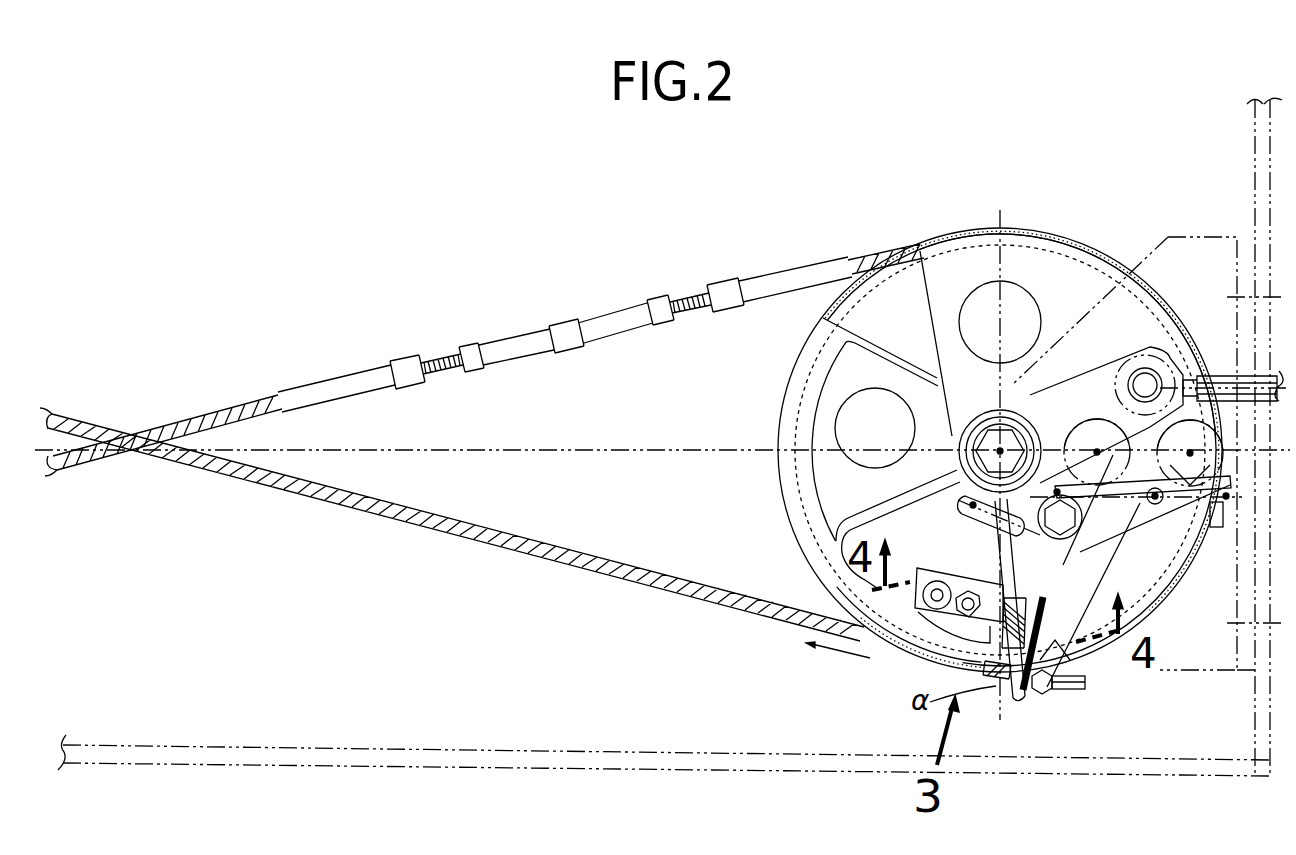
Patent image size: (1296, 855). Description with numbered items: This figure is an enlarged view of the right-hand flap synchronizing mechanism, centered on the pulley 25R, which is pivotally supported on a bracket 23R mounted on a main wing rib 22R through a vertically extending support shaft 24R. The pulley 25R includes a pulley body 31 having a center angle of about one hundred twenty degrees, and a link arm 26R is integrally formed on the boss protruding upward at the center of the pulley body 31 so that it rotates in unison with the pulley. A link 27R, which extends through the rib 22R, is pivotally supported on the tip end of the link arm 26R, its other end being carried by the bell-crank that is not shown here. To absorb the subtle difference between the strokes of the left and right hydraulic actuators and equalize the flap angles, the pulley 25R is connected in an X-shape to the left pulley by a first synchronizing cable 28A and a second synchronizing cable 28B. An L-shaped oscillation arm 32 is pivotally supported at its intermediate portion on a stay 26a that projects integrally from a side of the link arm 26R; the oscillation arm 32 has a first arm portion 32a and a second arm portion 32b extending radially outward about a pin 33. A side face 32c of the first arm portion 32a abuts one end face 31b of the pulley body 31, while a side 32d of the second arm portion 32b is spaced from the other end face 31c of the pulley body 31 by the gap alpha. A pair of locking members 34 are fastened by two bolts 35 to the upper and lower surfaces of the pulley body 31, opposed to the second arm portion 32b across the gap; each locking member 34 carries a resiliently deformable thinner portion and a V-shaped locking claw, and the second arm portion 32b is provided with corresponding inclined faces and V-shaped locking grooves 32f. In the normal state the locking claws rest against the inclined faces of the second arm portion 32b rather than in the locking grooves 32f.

The rib 22R is at (1255, 158).
The bracket 23R is at (1168, 237).
The support shaft 24R is at (960, 440).
The pulley 25R is at (941, 205).
The link arm 26R is at (1100, 378).
The stay 26a is at (1130, 535).
The link 27R is at (1205, 345).
The first synchronizing cable 28A is at (252, 483).
The second synchronizing cable 28B is at (240, 400).
The pulley body 31 is at (1020, 230).
The end face 31b is at (1055, 487).
The other end face 31c is at (976, 518).
The oscillation arm 32 is at (1110, 585).
The first arm portion 32a is at (1200, 500).
The second arm portion 32b is at (1068, 635).
The side face 32c is at (1172, 500).
The side 32d is at (988, 698).
The locking groove 32f is at (1050, 697).
The pin 33 is at (1068, 540).
The locking member 34 is at (941, 620).
The bolt 35 is at (968, 595).